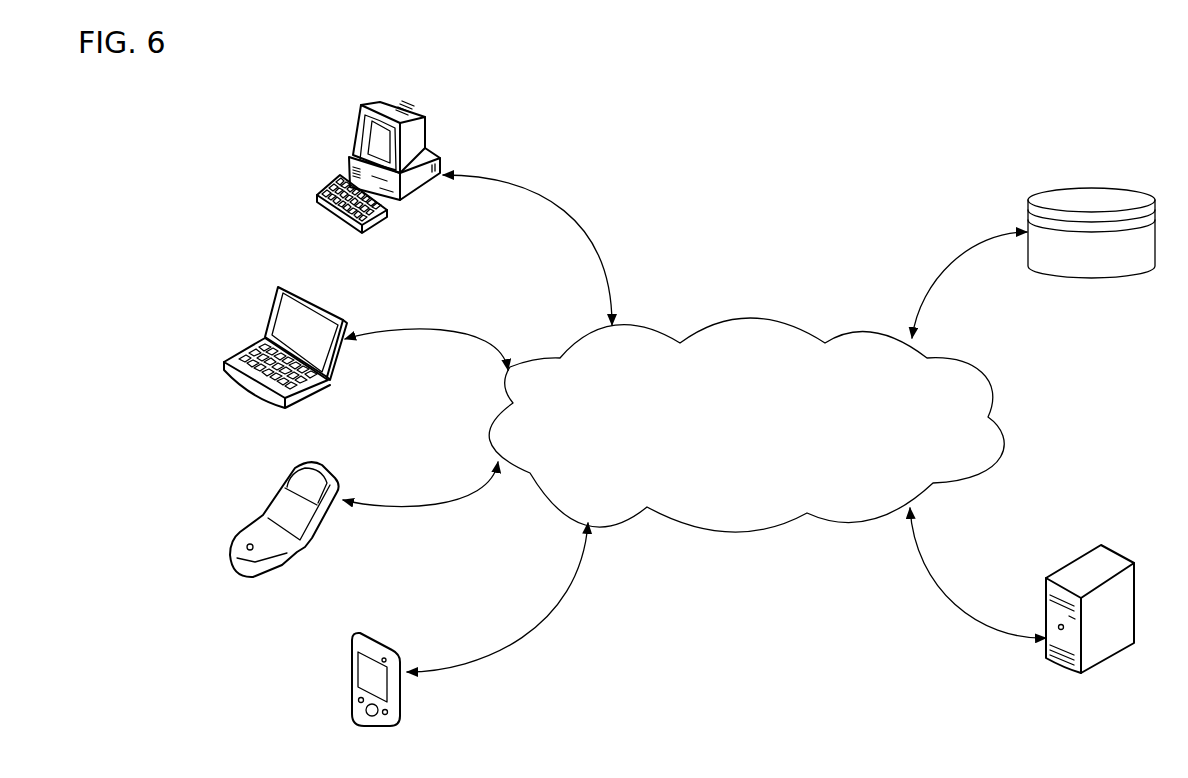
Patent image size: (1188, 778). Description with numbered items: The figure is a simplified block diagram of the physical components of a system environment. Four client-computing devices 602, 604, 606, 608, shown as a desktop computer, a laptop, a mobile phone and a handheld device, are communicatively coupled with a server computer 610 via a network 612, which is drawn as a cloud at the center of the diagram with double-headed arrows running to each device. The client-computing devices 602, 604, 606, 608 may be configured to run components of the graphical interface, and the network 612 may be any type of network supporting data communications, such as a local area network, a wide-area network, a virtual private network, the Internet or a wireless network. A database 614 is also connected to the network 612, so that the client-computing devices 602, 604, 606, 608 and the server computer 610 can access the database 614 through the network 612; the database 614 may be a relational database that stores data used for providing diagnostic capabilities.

The client-computing device 602 is at (372, 167).
The client-computing device 604 is at (281, 347).
The client-computing device 606 is at (274, 519).
The client-computing device 608 is at (352, 679).
The server computer 610 is at (1087, 620).
The network 612 is at (746, 425).
The database 614 is at (1083, 219).